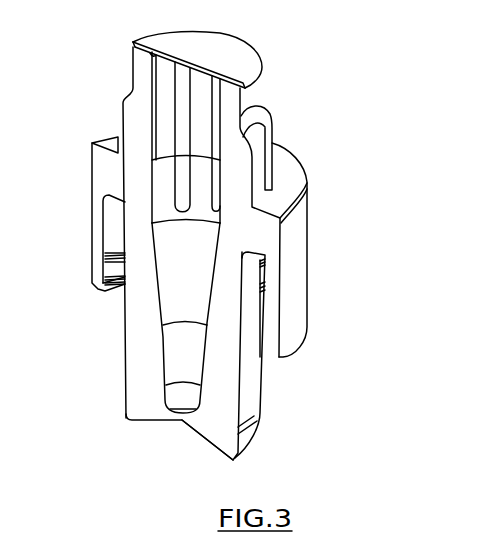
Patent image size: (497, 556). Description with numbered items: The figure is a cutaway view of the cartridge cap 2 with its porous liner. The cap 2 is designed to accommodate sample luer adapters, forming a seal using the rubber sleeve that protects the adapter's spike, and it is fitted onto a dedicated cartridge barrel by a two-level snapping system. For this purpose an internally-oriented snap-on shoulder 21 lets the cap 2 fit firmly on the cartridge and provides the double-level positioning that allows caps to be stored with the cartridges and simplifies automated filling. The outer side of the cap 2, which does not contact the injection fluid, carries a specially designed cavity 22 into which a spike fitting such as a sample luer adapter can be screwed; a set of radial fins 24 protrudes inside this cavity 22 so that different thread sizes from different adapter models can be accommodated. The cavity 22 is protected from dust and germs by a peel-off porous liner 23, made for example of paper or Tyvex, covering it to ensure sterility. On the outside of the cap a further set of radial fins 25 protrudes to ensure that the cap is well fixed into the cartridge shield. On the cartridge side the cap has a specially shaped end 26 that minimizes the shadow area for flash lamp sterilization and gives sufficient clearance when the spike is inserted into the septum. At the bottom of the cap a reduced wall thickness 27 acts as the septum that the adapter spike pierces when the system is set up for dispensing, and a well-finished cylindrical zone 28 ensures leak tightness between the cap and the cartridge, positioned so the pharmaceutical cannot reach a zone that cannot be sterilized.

The cap 2 is at (345, 272).
The snap-on shoulder 21 is at (113, 268).
The cavity 22 is at (182, 300).
The peel-off porous liner 23 is at (222, 43).
The radial fins 24 is at (183, 80).
The radial fins 25 is at (268, 142).
The specially shaped end 26 is at (213, 445).
The reduced wall thickness 27 is at (182, 413).
The cylindrical zone 28 is at (250, 435).